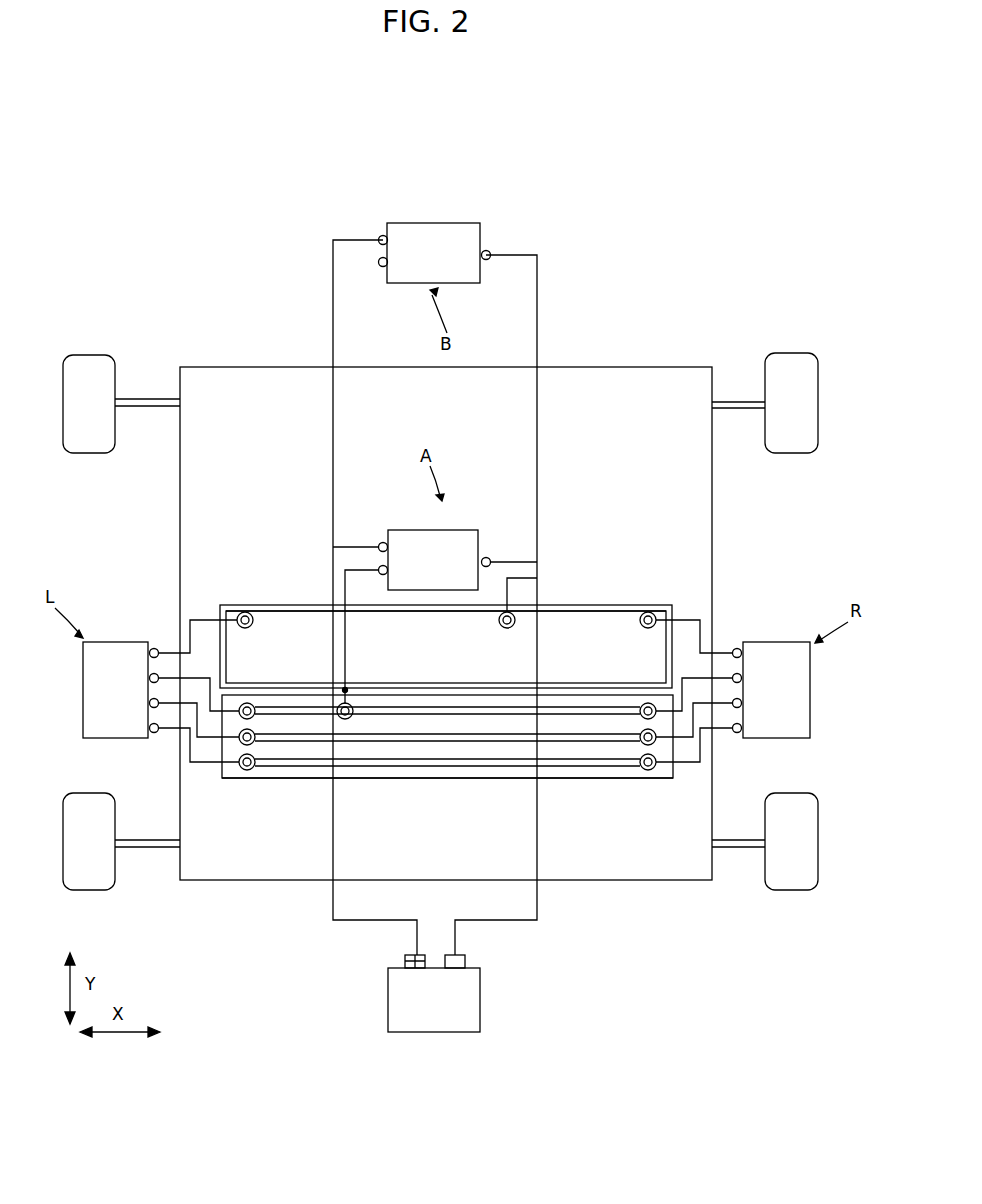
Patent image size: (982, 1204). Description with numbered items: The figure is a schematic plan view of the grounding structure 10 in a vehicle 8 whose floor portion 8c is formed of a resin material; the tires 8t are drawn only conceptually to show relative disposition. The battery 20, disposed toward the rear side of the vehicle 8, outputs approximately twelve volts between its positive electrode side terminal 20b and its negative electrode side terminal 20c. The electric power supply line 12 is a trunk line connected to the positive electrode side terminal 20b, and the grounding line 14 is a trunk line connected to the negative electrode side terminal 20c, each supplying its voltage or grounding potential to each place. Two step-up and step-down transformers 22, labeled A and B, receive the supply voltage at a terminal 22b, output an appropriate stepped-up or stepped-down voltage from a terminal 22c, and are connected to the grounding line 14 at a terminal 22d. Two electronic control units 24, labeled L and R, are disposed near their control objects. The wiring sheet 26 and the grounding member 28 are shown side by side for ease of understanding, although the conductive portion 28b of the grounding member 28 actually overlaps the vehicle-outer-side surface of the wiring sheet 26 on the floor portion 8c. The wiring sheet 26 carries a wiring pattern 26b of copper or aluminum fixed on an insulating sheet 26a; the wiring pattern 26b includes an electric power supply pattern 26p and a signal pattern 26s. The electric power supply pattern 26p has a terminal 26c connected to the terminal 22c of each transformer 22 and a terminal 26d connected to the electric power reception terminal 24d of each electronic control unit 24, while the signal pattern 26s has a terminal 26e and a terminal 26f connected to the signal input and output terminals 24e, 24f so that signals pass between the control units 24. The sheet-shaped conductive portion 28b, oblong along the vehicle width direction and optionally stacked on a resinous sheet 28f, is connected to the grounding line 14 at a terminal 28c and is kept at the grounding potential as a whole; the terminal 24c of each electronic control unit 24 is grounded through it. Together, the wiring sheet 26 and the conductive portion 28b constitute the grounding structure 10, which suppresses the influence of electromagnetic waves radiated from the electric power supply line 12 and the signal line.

The vehicle 8 is at (648, 316).
The floor portion 8c is at (712, 487).
The tires 8t is at (88, 358).
The grounding structure 10 is at (260, 1027).
The electric power supply line 12 is at (333, 335).
The grounding line 14 is at (537, 335).
The battery 20 is at (480, 1012).
The positive electrode side terminal 20b is at (404, 960).
The negative electrode side terminal 20c is at (466, 961).
The step-up and step-down transformer 22 is at (432, 232).
The terminal of step-up and step-down transformer 22b is at (381, 236).
The terminal of step-up and step-down transformer 22c is at (383, 268).
The terminal of step-up and step-down transformer 22d is at (489, 250).
The electronic control unit 24 is at (83, 688).
The terminal of electronic control unit 24c is at (156, 647).
The electric power reception terminal 24d is at (150, 678).
The signal input and output terminal 24e is at (146, 704).
The signal input and output terminal 24f is at (154, 735).
The wiring sheet 26 is at (297, 785).
The insulating sheet 26a is at (345, 781).
The wiring pattern 26b is at (400, 780).
The terminal of electric power supply pattern 26c is at (352, 702).
The terminal of electric power supply pattern 26d is at (252, 702).
The terminal of signal pattern 26e is at (240, 745).
The terminal of signal pattern 26f is at (246, 772).
The electric power supply pattern 26p is at (458, 710).
The signal pattern 26s is at (535, 748).
The grounding member 28 is at (292, 600).
The conductive portion 28b is at (610, 604).
The terminal of conductive portion 28c is at (512, 610).
The resinous sheet 28f is at (548, 603).